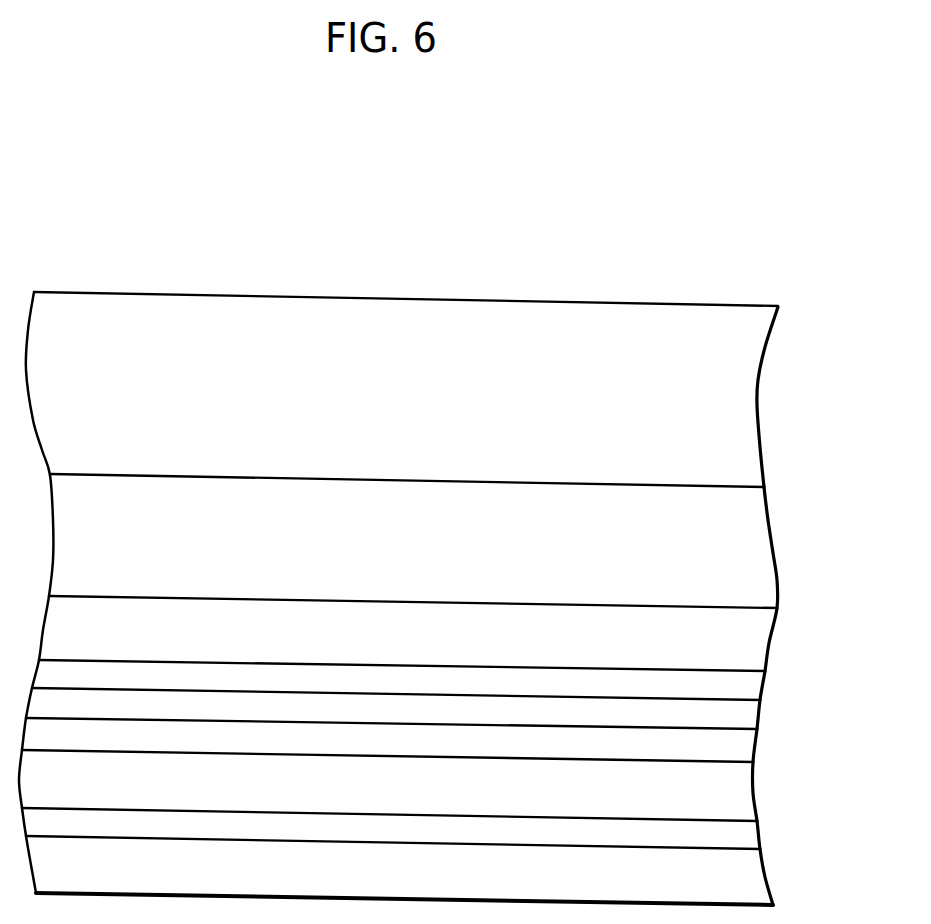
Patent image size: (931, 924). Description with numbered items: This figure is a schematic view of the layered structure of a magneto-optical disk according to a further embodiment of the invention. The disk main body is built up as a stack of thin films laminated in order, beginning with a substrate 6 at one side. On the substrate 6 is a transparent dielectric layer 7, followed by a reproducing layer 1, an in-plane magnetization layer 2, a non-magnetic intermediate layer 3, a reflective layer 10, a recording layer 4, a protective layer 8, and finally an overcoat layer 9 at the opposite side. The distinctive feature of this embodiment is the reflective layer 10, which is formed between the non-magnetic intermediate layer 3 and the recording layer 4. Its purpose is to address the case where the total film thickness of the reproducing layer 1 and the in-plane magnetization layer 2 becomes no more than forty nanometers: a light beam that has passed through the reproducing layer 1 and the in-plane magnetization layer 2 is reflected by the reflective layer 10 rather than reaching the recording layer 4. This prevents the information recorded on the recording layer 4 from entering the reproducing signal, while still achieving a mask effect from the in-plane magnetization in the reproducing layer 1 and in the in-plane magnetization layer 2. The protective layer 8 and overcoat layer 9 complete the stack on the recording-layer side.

The reproducing layer 1 is at (768, 645).
The in-plane magnetization layer 2 is at (757, 690).
The non-magnetic intermediate layer 3 is at (752, 718).
The recording layer 4 is at (750, 794).
The substrate 6 is at (757, 405).
The transparent dielectric layer 7 is at (772, 555).
The protective layer 8 is at (755, 835).
The overcoat layer 9 is at (760, 878).
The reflective layer 10 is at (750, 748).